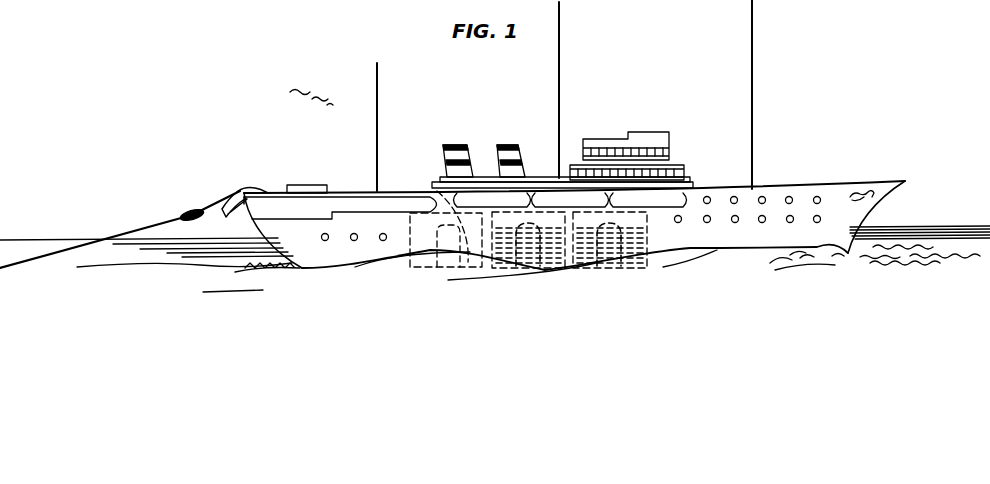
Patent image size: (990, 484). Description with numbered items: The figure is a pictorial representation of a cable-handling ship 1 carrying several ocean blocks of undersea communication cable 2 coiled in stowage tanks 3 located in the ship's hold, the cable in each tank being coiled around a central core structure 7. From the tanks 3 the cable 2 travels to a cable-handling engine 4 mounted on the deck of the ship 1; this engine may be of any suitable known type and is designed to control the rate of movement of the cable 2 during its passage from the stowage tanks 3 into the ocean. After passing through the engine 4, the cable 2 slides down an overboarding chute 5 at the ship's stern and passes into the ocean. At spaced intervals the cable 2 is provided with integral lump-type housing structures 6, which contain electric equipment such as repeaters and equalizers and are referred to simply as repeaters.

The cable-handling ship 1 is at (833, 189).
The undersea communication cable 2 is at (162, 224).
The stowage tanks 3 is at (412, 242).
The cable-handling engine 4 is at (311, 187).
The overboarding chute 5 is at (236, 190).
The lump-type housing structures 6 is at (190, 210).
The central core structure 7 is at (436, 236).